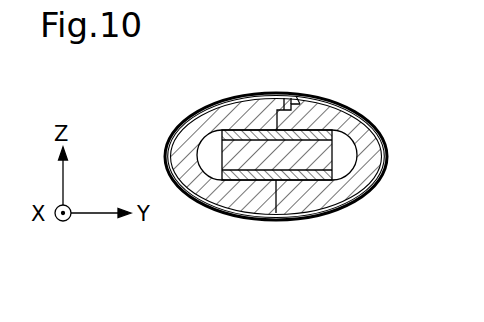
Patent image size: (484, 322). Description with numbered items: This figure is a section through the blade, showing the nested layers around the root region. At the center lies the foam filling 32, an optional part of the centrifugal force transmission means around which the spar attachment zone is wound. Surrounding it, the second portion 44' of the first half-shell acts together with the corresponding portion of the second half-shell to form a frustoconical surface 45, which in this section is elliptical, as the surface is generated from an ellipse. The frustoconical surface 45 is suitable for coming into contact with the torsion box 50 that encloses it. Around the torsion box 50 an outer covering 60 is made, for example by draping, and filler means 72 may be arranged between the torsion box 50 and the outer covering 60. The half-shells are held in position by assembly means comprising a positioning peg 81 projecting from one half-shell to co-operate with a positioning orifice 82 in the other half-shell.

The foam filling 32 is at (297, 163).
The second portion of the first half-shell 44' is at (288, 143).
The frustoconical surface 45 is at (322, 98).
The torsion box 50 is at (379, 129).
The outer covering 60 is at (367, 196).
The filler means 72 is at (383, 160).
The positioning peg 81 is at (280, 100).
The positioning orifice 82 is at (300, 97).